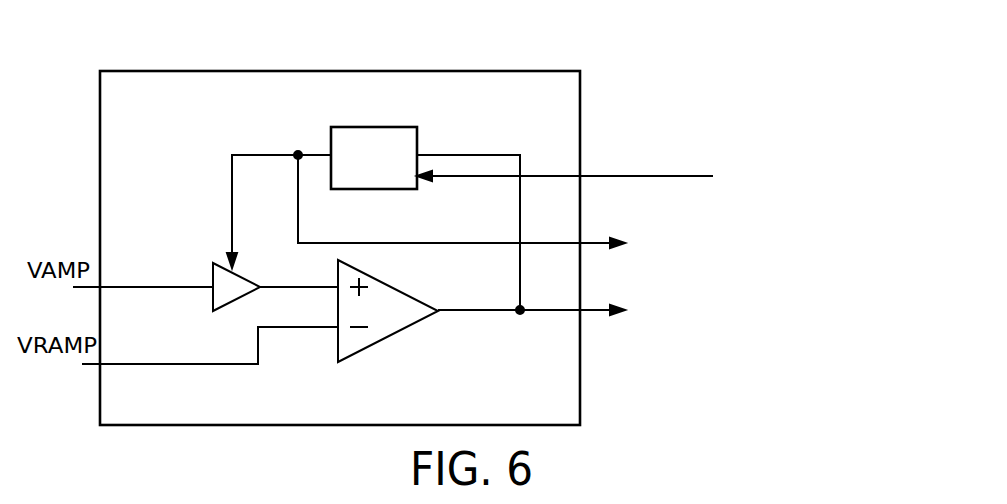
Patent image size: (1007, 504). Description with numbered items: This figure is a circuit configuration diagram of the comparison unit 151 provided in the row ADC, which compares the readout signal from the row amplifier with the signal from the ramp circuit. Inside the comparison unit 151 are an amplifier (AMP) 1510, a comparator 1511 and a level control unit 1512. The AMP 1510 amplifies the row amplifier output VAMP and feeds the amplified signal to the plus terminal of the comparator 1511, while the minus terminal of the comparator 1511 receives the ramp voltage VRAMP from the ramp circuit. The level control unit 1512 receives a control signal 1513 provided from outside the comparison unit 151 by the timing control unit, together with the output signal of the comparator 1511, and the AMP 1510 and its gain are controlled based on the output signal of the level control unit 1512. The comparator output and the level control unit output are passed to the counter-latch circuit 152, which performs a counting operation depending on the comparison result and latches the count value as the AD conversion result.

The comparison unit 151 is at (372, 71).
The level control unit 1512 is at (413, 127).
The amplifier (AMP) 1510 is at (213, 262).
The comparator 1511 is at (388, 313).
The control signal 1513 is at (578, 149).
The counter-latch circuit 152 is at (754, 275).